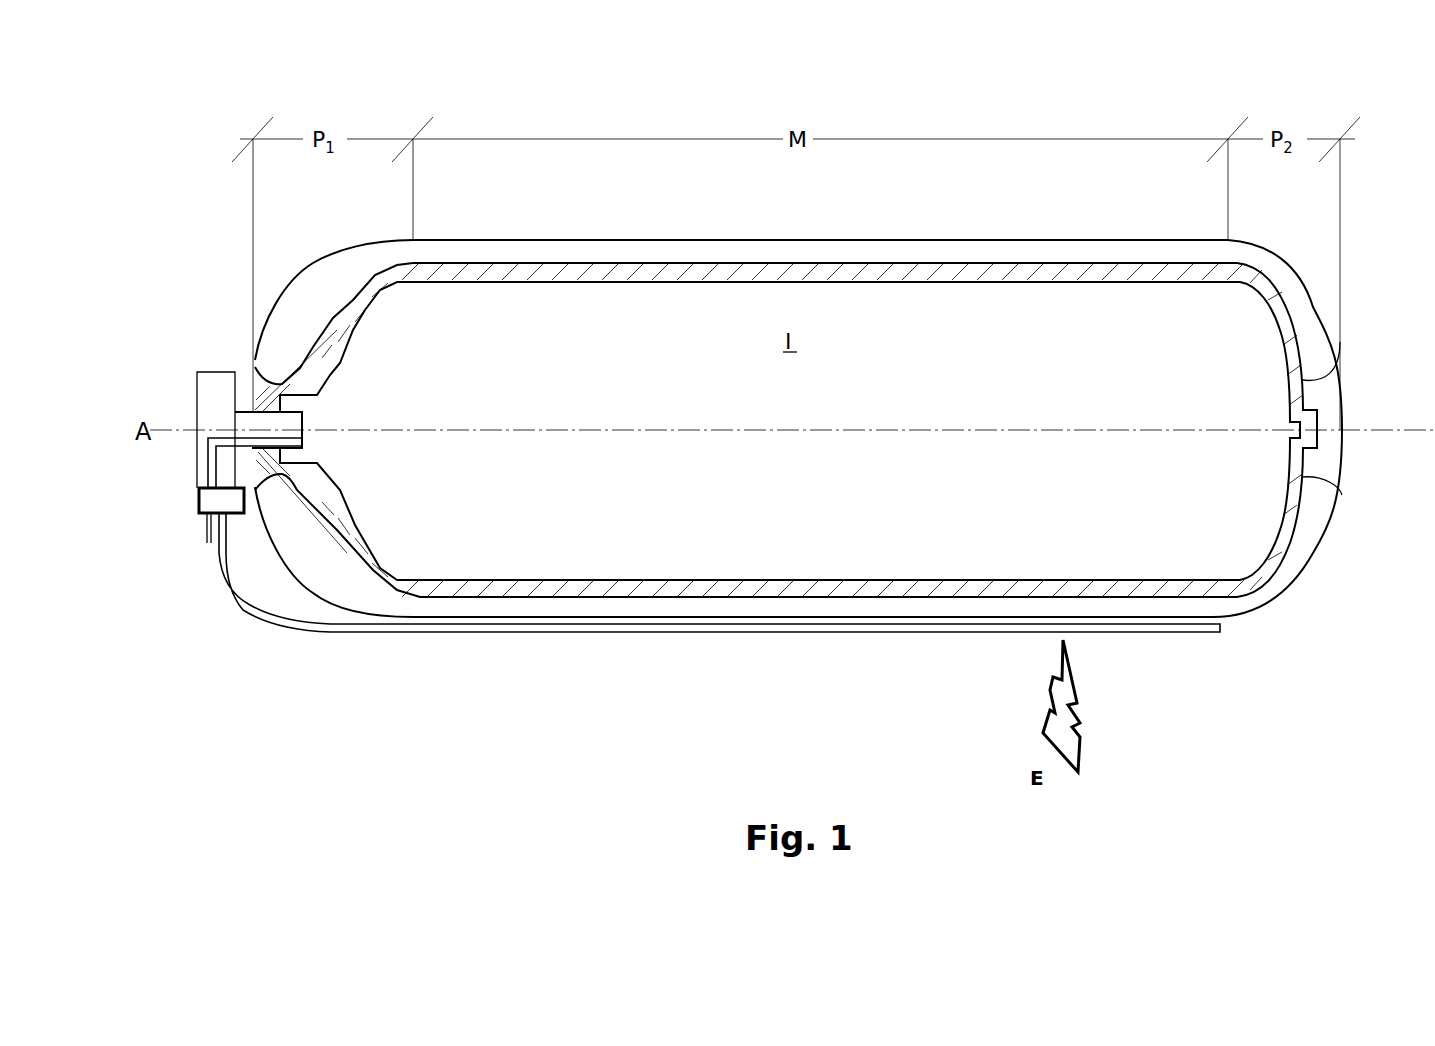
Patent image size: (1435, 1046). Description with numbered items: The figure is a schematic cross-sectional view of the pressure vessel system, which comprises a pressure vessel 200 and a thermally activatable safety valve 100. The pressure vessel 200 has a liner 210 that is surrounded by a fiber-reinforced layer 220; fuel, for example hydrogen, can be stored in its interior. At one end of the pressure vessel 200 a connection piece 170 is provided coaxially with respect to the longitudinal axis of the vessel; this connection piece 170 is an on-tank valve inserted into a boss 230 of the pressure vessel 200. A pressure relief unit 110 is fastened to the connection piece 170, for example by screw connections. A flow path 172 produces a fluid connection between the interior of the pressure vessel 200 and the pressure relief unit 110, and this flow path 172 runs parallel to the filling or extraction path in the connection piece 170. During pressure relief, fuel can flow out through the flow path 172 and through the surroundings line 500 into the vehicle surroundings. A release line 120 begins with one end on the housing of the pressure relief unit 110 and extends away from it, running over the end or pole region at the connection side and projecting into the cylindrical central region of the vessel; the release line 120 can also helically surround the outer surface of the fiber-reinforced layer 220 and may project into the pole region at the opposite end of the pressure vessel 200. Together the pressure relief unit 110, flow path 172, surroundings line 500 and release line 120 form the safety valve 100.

The pressure vessel 200 is at (355, 108).
The liner 210 is at (745, 272).
The fiber-reinforced layer 220 is at (848, 250).
The boss 230 is at (262, 398).
The connection piece 170 is at (207, 392).
The flow path 172 is at (210, 443).
The pressure relief unit 110 is at (210, 500).
The surroundings line 500 is at (207, 531).
The release line 120 is at (228, 570).
The safety valve 100 is at (192, 600).